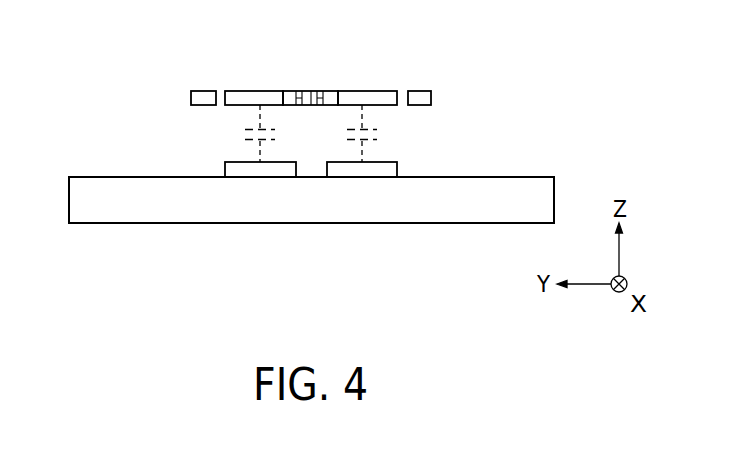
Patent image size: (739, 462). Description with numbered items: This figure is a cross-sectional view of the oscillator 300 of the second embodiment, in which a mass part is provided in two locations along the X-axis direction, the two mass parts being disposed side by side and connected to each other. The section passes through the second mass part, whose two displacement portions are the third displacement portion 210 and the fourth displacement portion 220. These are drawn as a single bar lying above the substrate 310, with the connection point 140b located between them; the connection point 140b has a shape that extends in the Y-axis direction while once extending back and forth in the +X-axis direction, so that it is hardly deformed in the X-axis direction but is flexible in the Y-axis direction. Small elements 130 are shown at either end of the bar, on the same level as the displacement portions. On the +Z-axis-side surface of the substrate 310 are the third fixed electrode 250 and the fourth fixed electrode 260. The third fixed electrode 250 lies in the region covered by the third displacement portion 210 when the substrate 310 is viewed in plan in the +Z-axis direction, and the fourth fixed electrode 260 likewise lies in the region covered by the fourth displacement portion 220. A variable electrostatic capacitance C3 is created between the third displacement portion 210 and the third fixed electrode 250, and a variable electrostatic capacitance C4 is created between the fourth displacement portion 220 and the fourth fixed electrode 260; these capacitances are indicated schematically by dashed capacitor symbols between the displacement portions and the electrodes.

The oscillator 300 is at (529, 38).
The substrate 310 is at (523, 176).
The third fixed electrode 250 is at (225, 172).
The fourth fixed electrode 260 is at (397, 171).
The support portions 130 is at (205, 90).
The third displacement portion 210 is at (258, 90).
The connection point 140b is at (315, 90).
The fourth displacement portion 220 is at (368, 90).
The electrostatic capacitance C3 is at (243, 133).
The electrostatic capacitance C4 is at (380, 133).